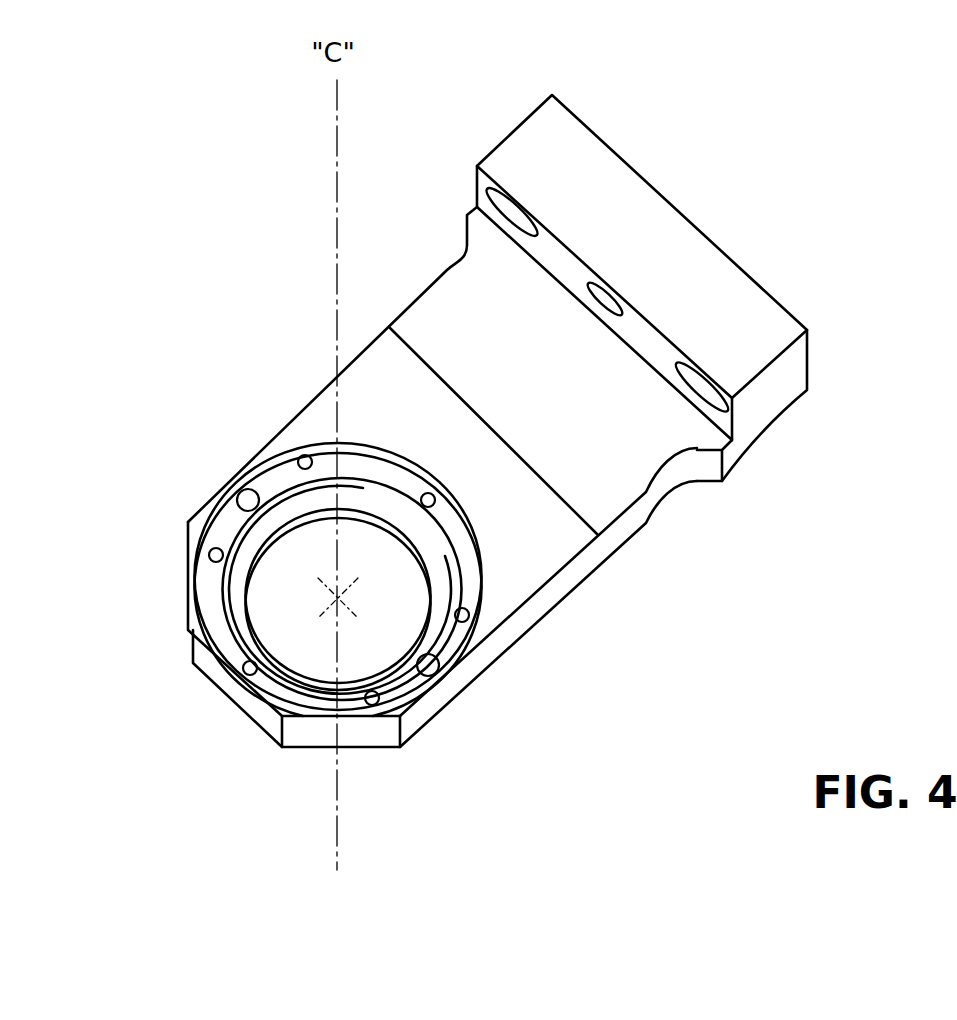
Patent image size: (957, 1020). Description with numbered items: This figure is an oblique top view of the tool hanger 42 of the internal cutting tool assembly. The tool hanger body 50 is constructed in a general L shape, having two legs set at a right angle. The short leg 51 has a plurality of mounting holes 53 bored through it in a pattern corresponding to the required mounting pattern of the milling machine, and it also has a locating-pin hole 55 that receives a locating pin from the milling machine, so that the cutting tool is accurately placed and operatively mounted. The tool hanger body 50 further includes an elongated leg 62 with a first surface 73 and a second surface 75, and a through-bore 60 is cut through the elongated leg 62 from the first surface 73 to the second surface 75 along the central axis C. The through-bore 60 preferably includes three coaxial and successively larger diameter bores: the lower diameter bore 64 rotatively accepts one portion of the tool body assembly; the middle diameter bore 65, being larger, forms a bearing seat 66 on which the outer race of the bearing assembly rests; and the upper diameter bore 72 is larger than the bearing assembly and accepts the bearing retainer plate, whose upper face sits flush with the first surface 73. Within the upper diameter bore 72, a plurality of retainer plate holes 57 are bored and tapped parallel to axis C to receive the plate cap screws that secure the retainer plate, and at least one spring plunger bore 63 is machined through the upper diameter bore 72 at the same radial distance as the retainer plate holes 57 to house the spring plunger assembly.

The bracket assembly 42 is at (262, 194).
The tool hanger body 50 is at (652, 516).
The short leg 51 is at (752, 278).
The mounting holes 53 is at (502, 188).
The locating-pin hole 55 is at (608, 290).
The retainer plate holes 57 is at (305, 455).
The through-bore 60 is at (350, 610).
The elongated leg 62 is at (282, 432).
The spring plunger bore 63 is at (240, 490).
The lower diameter bore 64 is at (270, 546).
The middle diameter bore 65 is at (442, 530).
The bearing seat 66 is at (363, 488).
The upper diameter bore 72 is at (482, 601).
The first surface 73 is at (520, 520).
The second surface 75 is at (478, 668).